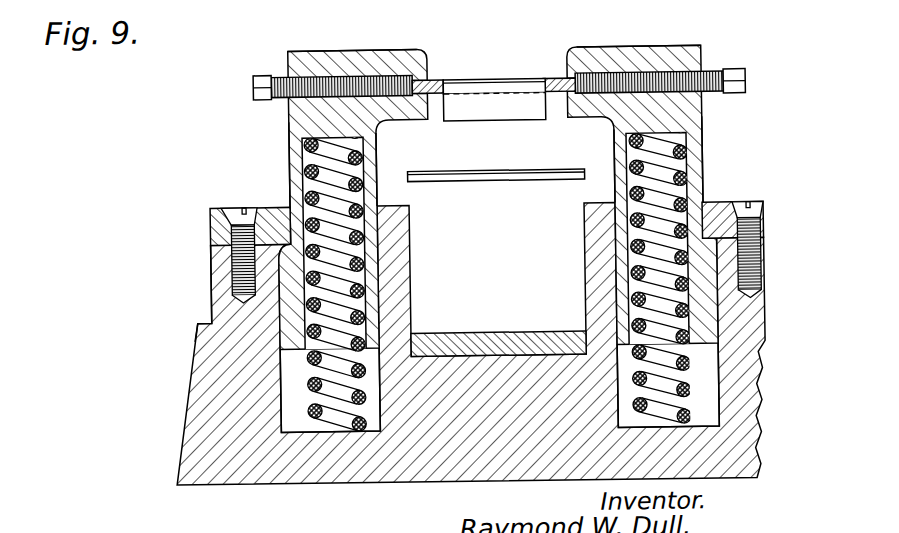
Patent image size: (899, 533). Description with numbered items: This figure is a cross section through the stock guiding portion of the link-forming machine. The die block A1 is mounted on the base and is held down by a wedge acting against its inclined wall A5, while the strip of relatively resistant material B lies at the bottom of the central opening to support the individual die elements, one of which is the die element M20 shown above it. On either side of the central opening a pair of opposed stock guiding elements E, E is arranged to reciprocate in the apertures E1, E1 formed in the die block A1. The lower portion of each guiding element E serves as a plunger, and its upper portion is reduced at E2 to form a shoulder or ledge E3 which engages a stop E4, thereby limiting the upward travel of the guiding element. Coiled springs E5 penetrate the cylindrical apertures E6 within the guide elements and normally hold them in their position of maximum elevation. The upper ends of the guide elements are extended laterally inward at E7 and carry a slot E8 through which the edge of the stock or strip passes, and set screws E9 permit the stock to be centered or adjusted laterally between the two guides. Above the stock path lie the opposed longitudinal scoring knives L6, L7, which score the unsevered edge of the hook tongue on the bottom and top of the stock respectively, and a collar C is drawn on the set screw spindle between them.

The die block A1 is at (210, 367).
The inclined wall A5 is at (194, 338).
The strip of relatively resistant material B is at (457, 340).
The collar on screw spindle C is at (556, 80).
The stock guiding element E is at (317, 113).
The aperture E1 is at (619, 428).
The reduced upper portion E2 is at (729, 167).
The shoulder E3 is at (740, 229).
The stop E4 is at (734, 206).
The coiled spring E5 is at (633, 222).
The cylindrical aperture E6 is at (378, 151).
The laterally inwardly extended upper end E7 is at (598, 24).
The slot E8 is at (562, 80).
The set screw E9 is at (730, 46).
The longitudinal scoring knife L6 is at (559, 130).
The longitudinal scoring knife L7 is at (479, 52).
The die element M20 is at (494, 152).